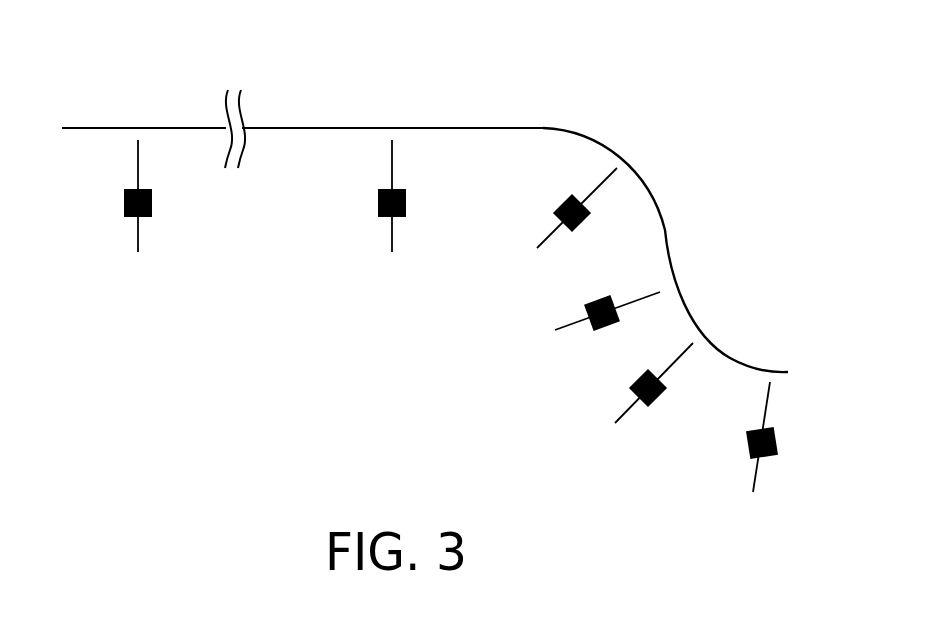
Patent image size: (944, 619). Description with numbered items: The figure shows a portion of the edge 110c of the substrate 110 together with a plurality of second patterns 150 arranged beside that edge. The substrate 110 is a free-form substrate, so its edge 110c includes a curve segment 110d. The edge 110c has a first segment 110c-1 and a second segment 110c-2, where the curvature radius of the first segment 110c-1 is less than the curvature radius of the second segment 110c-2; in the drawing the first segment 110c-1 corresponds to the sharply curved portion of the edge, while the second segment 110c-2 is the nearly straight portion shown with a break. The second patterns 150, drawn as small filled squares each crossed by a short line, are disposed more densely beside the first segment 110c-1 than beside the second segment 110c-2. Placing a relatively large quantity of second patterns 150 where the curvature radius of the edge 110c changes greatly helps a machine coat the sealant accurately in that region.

The substrate 110 is at (428, 210).
The edge of the substrate 110c is at (742, 13).
The first segment 110c-1 is at (679, 250).
The second segment 110c-2 is at (98, 128).
The curve segment 110d is at (676, 250).
The second patterns 150 is at (422, 201).